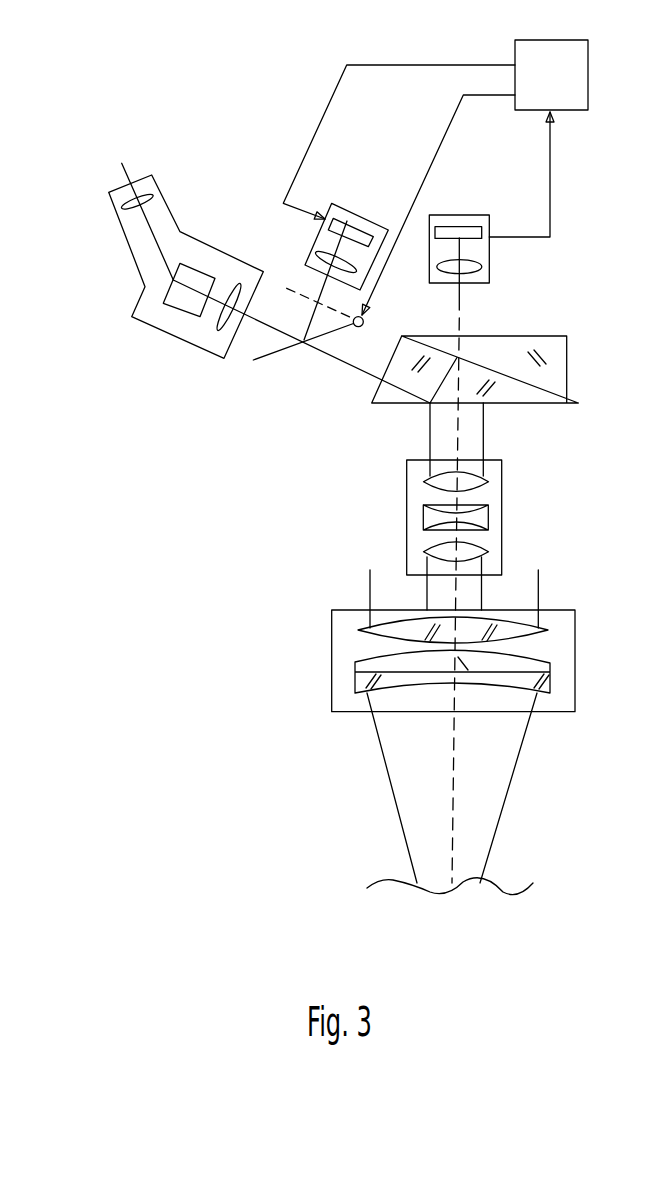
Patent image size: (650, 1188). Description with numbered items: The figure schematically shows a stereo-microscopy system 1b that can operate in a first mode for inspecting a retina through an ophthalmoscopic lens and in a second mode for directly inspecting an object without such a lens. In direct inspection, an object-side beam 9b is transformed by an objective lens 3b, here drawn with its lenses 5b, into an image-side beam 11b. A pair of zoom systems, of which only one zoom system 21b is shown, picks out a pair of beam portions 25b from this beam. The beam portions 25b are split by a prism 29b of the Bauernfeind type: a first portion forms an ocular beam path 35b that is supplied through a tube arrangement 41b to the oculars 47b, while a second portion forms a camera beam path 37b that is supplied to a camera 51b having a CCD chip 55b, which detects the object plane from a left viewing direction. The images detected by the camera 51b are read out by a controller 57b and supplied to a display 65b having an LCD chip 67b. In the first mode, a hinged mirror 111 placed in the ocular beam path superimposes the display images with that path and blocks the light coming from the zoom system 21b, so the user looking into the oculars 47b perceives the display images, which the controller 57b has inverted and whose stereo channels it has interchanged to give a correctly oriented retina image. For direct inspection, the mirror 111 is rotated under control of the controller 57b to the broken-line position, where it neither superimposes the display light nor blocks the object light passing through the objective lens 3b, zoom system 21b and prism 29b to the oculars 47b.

The stereo-microscopy system 1b is at (232, 96).
The objective lens 3b is at (575, 650).
The objective lenses 5b is at (355, 678).
The object-side beam 9b is at (512, 780).
The image-side beam 11b is at (540, 597).
The zoom system 21b is at (502, 525).
The beam portion 25b is at (483, 432).
The prism 29b is at (578, 402).
The ocular beam path 35b is at (353, 368).
The camera beam path 37b is at (460, 300).
The tube arrangement 41b is at (150, 330).
The ocular 47b is at (113, 200).
The camera 51b is at (489, 250).
The CCD chip 55b is at (470, 230).
The controller 57b is at (569, 89).
The display 65b is at (315, 252).
The LCD chip 67b is at (352, 215).
The hinged mirror 111 is at (268, 357).